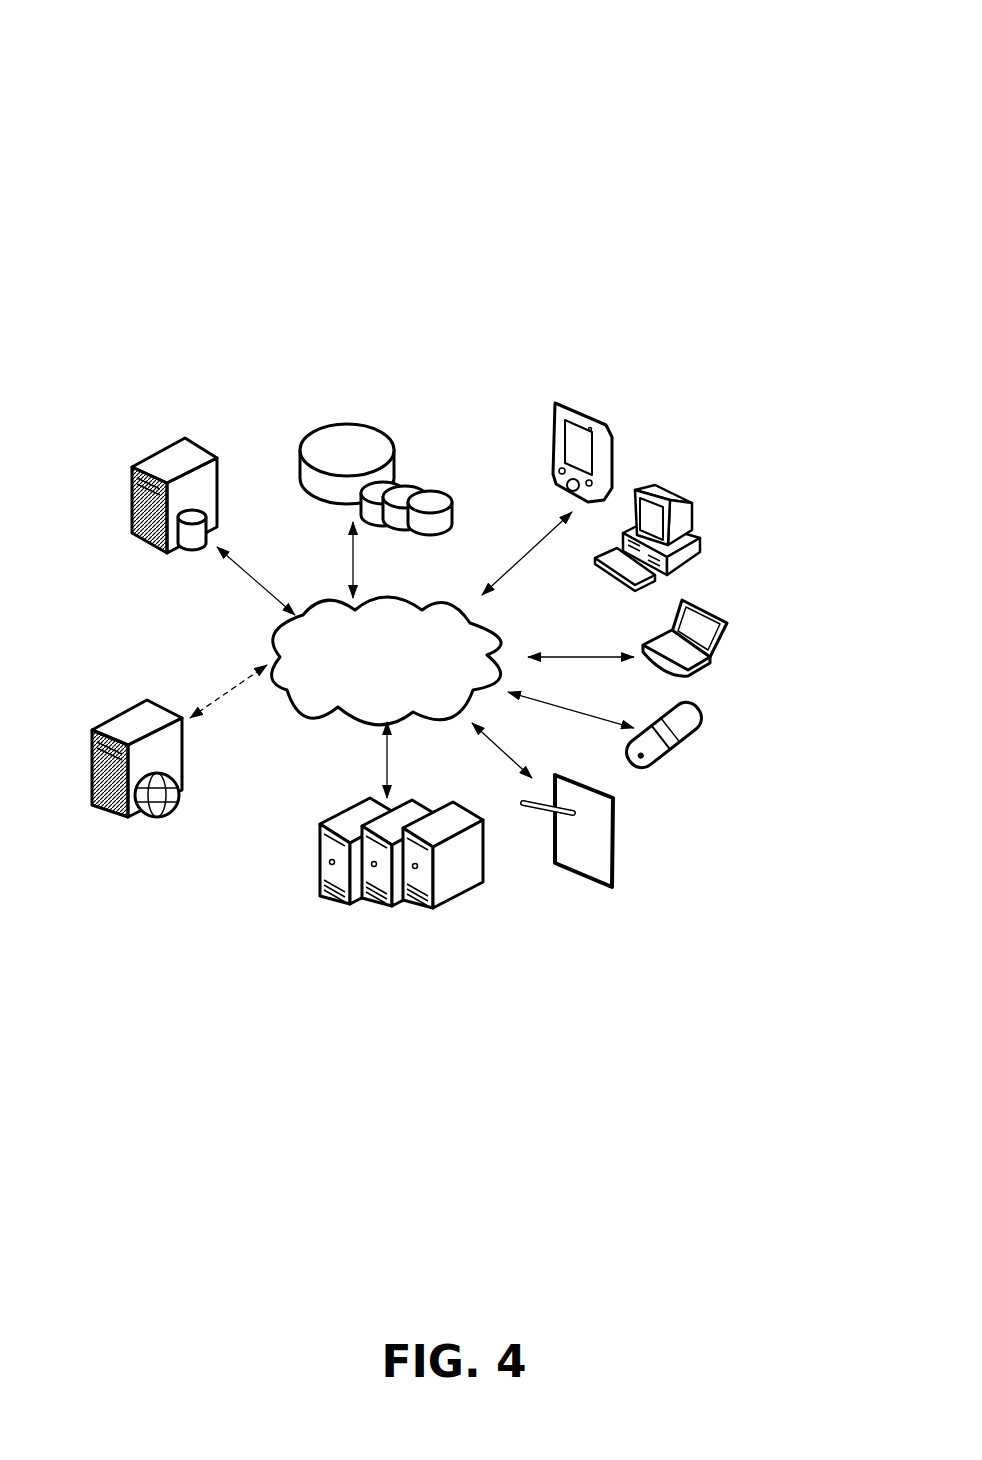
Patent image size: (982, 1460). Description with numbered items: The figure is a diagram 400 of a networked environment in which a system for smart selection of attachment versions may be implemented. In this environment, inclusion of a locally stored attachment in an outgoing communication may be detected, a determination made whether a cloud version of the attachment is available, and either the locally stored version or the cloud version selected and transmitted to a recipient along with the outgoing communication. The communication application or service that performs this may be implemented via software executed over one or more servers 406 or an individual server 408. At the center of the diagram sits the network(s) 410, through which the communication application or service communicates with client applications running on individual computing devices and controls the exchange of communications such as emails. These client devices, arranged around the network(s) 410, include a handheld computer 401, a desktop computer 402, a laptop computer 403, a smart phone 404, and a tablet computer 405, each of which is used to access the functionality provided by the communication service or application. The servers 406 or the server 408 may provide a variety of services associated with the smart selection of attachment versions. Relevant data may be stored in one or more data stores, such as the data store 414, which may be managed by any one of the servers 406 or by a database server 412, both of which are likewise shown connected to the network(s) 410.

The diagram 400 is at (752, 25).
The handheld computer 401 is at (615, 408).
The desktop computer 402 is at (703, 498).
The laptop computer 403 is at (727, 600).
The smart phone 404 is at (695, 710).
The tablet computer 405 is at (627, 817).
The servers 406 is at (350, 803).
The individual server 408 is at (117, 712).
The network(s) 410 is at (390, 587).
The database server 412 is at (188, 560).
The data store 414 is at (362, 407).